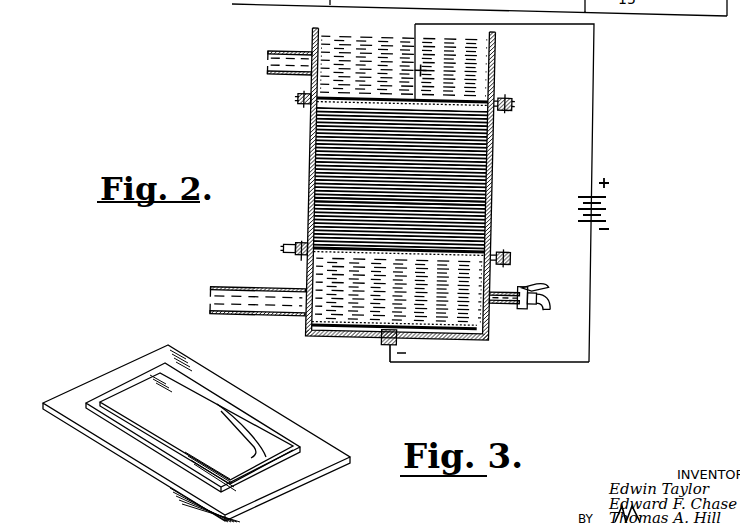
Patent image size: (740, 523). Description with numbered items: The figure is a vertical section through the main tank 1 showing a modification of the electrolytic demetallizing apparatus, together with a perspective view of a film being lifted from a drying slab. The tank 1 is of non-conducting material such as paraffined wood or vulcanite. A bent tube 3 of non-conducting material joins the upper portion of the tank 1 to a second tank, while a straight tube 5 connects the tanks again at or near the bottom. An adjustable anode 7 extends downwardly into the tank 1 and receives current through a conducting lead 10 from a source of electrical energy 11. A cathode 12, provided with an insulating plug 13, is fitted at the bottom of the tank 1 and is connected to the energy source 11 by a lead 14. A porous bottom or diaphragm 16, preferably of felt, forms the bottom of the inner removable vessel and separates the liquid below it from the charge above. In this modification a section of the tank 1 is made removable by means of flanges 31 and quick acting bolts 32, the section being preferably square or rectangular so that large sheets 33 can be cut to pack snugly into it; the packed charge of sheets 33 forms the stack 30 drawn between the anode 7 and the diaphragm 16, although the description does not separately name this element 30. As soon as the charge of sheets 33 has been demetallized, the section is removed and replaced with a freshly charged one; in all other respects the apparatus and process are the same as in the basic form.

The tank 1 is at (497, 61).
The bent tube 3 is at (266, 66).
The straight tube 5 is at (262, 313).
The adjustable anode 7 is at (424, 101).
The conducting lead 10 is at (545, 24).
The source of electrical energy 11 is at (607, 210).
The cathode 12 is at (422, 325).
The insulating plug 13 is at (384, 341).
The lead 14 is at (492, 363).
The porous bottom or diaphragm 16 is at (380, 258).
The stack of plates 30 is at (495, 186).
The flanges 31 is at (513, 106).
The quick acting bolts 32 is at (300, 106).
The large sheets 33 is at (318, 199).